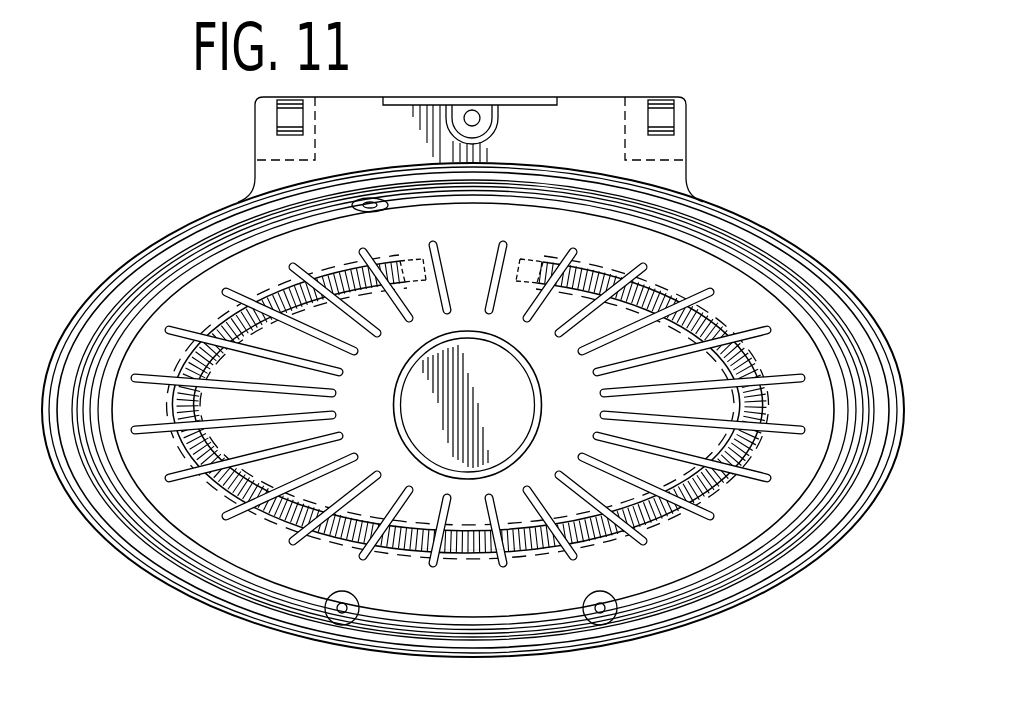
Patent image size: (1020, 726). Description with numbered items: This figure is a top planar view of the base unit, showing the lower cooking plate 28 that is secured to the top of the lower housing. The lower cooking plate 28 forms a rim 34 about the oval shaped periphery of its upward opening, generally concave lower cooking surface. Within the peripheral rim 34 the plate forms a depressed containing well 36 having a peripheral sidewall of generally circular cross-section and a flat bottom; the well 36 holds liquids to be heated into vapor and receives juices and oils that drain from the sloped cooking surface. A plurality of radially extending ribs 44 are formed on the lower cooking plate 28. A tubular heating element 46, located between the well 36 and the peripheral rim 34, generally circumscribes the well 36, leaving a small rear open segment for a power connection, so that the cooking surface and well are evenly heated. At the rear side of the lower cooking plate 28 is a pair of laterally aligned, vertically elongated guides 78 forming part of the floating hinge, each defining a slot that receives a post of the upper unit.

The guides 78 is at (688, 110).
The lower cooking plate 28 is at (687, 278).
The rim 34 is at (828, 275).
The well 36 is at (515, 401).
The ribs 44 is at (710, 510).
The heating element 46 is at (483, 563).